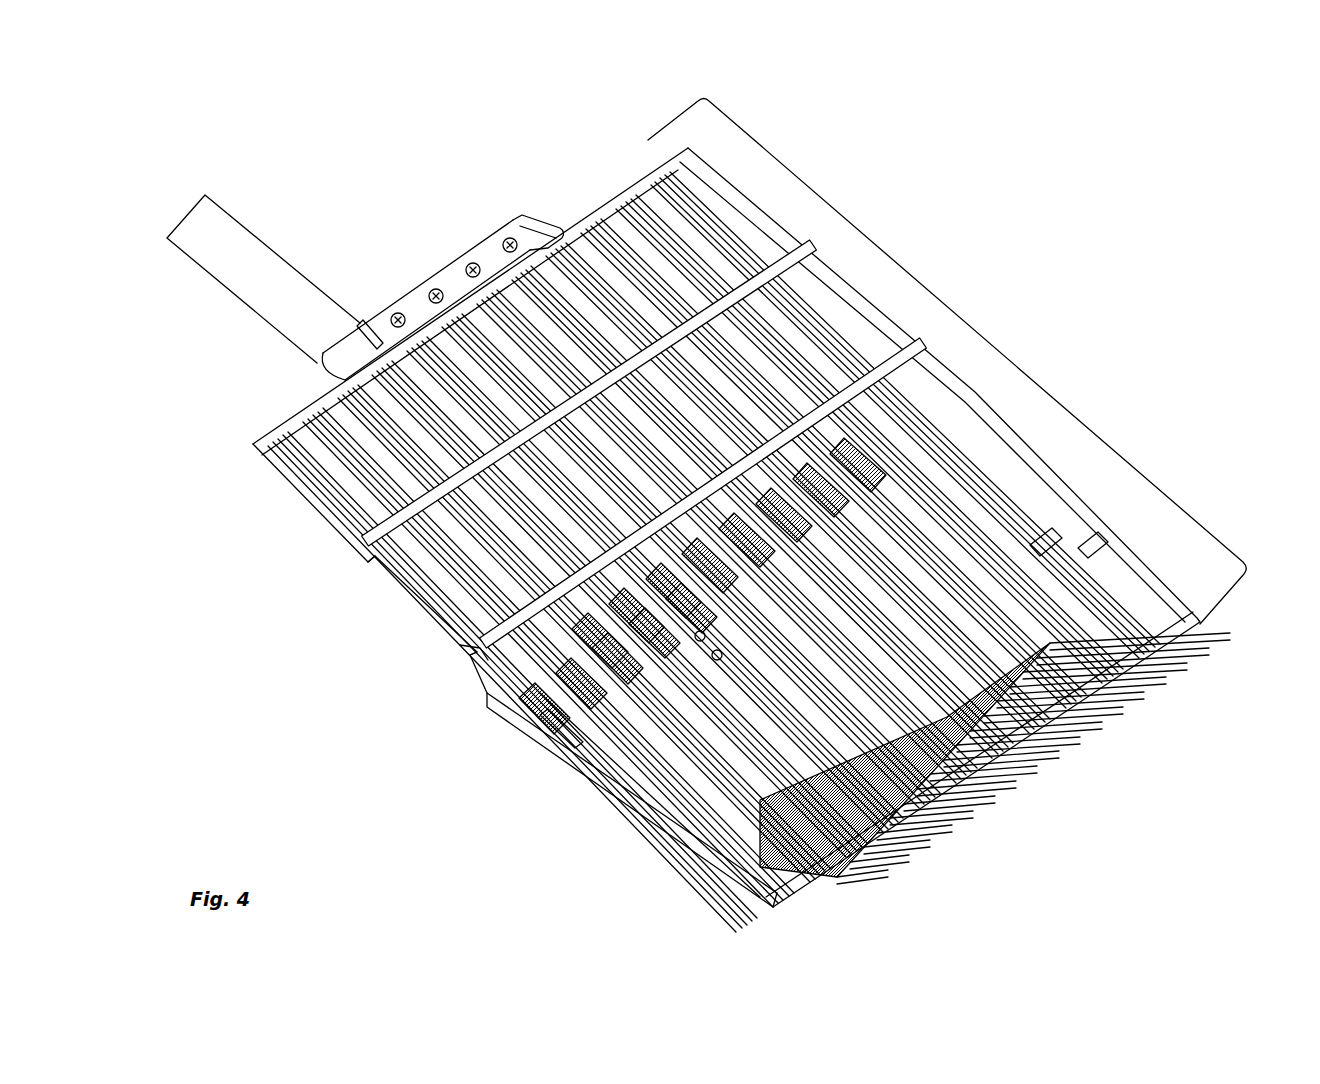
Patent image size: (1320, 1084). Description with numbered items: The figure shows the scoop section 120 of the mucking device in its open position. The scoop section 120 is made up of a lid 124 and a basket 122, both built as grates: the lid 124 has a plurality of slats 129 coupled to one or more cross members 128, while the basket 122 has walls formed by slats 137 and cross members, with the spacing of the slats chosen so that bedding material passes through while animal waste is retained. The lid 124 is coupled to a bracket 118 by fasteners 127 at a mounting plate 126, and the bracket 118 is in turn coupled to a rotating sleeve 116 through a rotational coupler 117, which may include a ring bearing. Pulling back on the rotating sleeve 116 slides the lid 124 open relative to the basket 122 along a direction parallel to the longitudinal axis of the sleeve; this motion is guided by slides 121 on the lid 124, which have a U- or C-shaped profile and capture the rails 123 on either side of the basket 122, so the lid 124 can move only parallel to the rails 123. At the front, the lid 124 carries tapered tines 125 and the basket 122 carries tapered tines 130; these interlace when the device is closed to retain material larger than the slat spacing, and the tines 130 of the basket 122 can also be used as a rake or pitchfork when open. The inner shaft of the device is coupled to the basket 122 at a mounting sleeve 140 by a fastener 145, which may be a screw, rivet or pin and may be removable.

The rotating sleeve 116 is at (258, 302).
The rotational coupler 117 is at (360, 323).
The bracket 118 is at (340, 362).
The scoop section 120 is at (947, 362).
The slides 121 is at (313, 510).
The basket 122 is at (1087, 550).
The rails 123 is at (1037, 553).
The lid 124 is at (300, 404).
The tines 125 is at (673, 627).
The mounting plate 126 is at (523, 237).
The fasteners 127 is at (500, 243).
The cross members 128 is at (488, 625).
The slats 129 is at (553, 563).
The tines 130 is at (940, 833).
The slats 137 is at (938, 510).
The mounting sleeve 140 is at (721, 656).
The fastener 145 is at (705, 637).